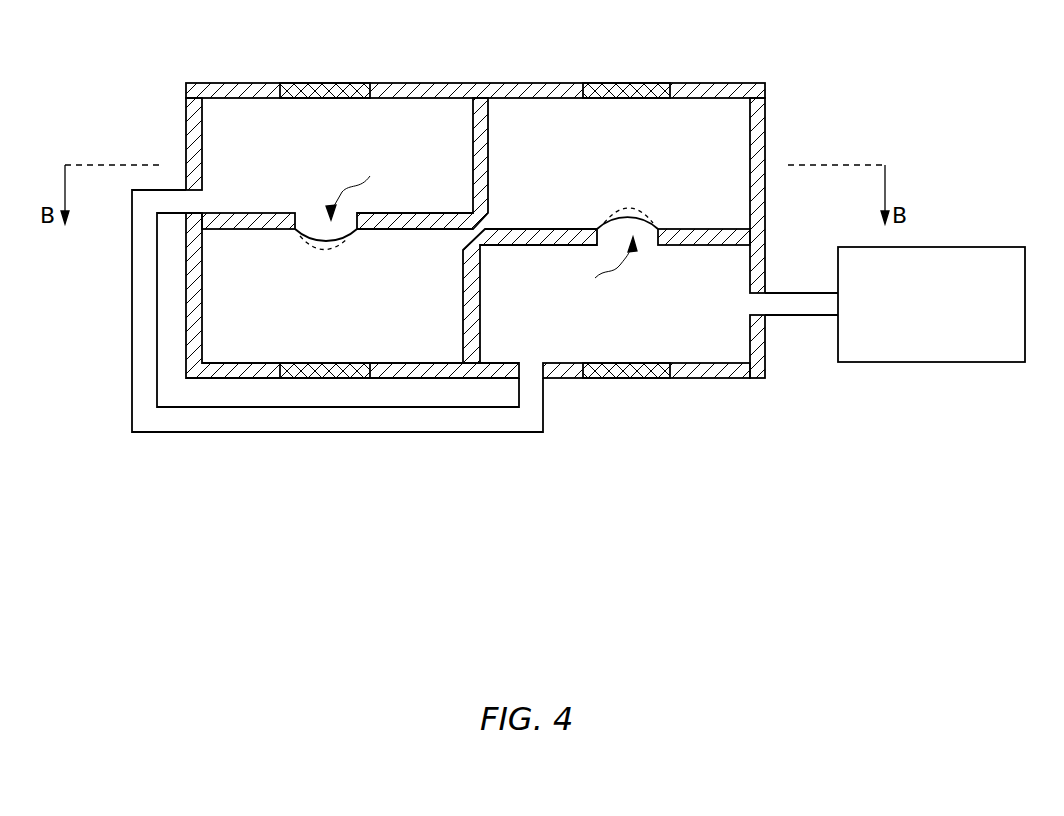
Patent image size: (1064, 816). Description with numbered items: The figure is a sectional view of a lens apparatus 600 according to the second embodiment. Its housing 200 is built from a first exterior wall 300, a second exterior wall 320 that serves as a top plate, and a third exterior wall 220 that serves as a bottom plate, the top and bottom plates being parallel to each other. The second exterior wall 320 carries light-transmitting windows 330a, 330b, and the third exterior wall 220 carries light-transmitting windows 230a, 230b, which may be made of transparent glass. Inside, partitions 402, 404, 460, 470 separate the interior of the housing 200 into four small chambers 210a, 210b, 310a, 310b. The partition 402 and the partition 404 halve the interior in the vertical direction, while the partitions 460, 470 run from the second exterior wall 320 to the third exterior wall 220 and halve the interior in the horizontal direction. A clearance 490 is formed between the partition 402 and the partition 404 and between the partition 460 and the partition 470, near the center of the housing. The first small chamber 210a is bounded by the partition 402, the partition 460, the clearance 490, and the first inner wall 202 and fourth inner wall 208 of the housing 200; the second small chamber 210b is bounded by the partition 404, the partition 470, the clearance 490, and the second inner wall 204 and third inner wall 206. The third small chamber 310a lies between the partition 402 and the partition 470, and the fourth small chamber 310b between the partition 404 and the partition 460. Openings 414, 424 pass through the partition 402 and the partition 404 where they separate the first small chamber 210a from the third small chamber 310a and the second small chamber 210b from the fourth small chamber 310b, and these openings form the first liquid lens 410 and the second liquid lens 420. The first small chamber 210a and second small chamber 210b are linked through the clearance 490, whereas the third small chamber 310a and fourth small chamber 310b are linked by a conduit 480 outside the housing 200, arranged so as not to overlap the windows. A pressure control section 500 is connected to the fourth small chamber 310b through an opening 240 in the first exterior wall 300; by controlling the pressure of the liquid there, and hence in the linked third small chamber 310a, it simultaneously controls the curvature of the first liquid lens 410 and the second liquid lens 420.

The housing 200 is at (186, 309).
The first inner wall 202 is at (203, 168).
The second inner wall 204 is at (750, 188).
The third inner wall 206 is at (440, 100).
The fourth inner wall 208 is at (450, 363).
The first small chamber 210a is at (285, 339).
The second small chamber 210b is at (718, 144).
The third exterior wall 220 is at (725, 378).
The window 230a is at (324, 380).
The window 230b is at (634, 378).
The opening 240 is at (760, 303).
The first exterior wall 300 is at (186, 122).
The third small chamber 310a is at (285, 146).
The fourth small chamber 310b is at (720, 339).
The second exterior wall 320 is at (231, 83).
The window 330a is at (331, 83).
The window 330b is at (641, 83).
The partition 402 is at (221, 229).
The partition 404 is at (553, 246).
The first liquid lens 410 is at (324, 250).
The opening 414 is at (359, 185).
The second liquid lens 420 is at (619, 210).
The opening 424 is at (605, 275).
The partition 460 is at (480, 333).
The partition 470 is at (489, 182).
The conduit 480 is at (227, 432).
The clearance 490 is at (463, 247).
The pressure control section 500 is at (932, 363).
The lens apparatus 600 is at (553, 610).